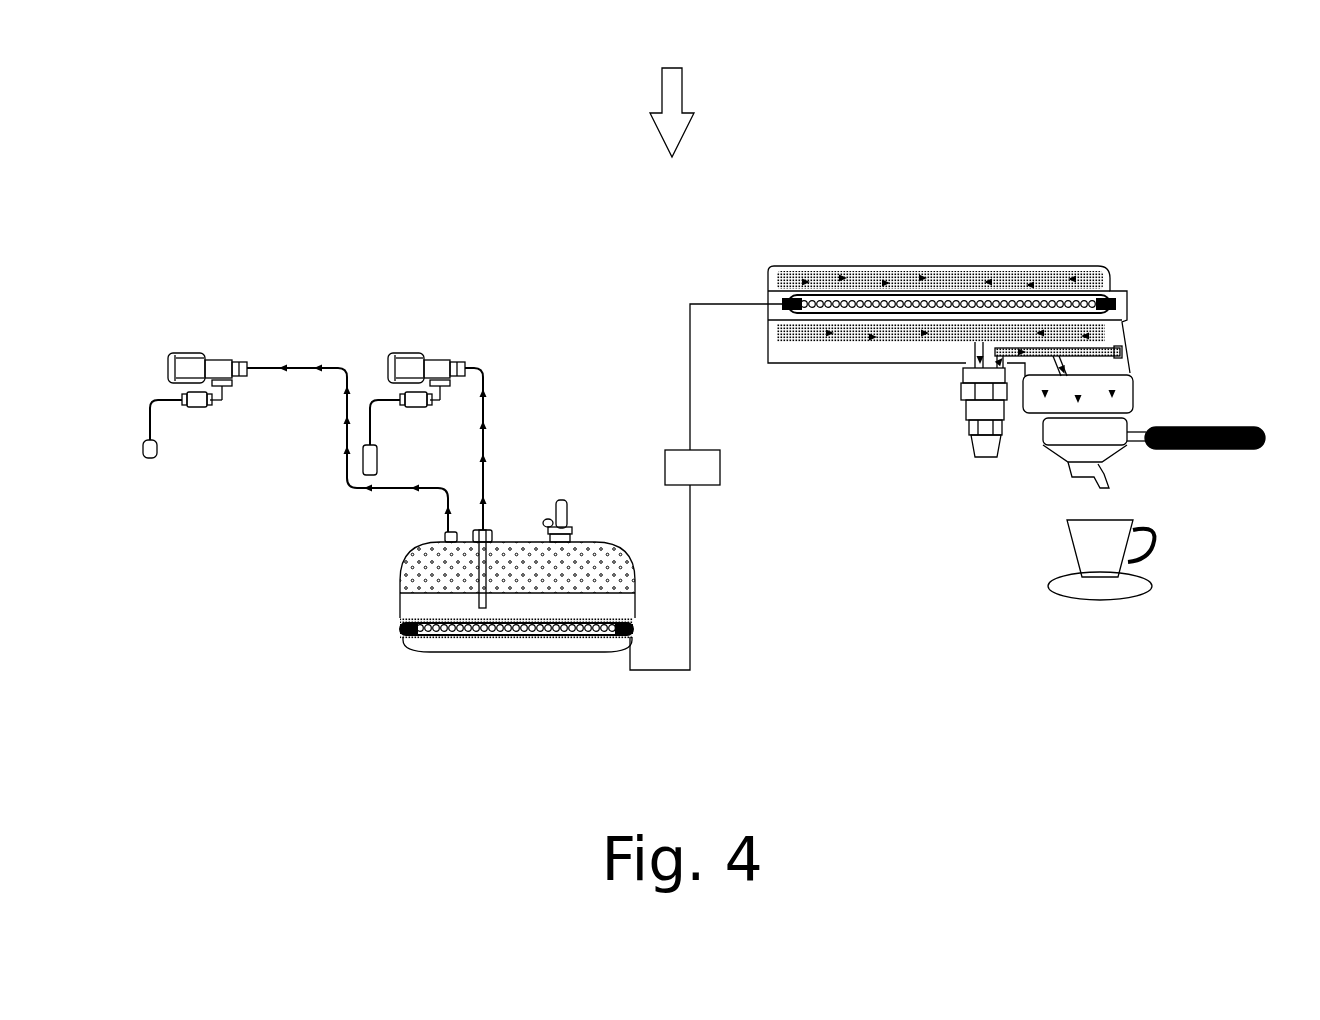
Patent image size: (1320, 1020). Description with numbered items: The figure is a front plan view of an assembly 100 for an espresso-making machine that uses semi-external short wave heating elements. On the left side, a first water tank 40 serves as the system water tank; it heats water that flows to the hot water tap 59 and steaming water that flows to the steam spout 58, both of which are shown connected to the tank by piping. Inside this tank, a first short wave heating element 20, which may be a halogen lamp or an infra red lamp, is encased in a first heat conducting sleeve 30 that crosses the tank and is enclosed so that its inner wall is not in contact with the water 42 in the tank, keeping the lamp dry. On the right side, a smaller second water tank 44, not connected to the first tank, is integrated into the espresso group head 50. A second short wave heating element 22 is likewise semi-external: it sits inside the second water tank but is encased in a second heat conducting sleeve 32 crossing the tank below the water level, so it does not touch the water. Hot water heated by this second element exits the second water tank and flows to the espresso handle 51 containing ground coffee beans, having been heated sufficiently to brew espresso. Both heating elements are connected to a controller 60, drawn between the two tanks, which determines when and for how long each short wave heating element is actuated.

The assembly 100 is at (672, 98).
The first short wave heating element 20 is at (402, 640).
The second short wave heating element 22 is at (1128, 304).
The first heat conducting sleeve 30 is at (573, 641).
The second heat conducting sleeve 32 is at (1128, 322).
The first water tank 40 is at (503, 656).
The water 42 is at (603, 605).
The second water tank 44 is at (1117, 278).
The espresso group head 50 is at (952, 371).
The espresso handle 51 is at (1118, 452).
The steam spout 58 is at (195, 412).
The hot water tap 59 is at (415, 412).
The controller 60 is at (724, 468).